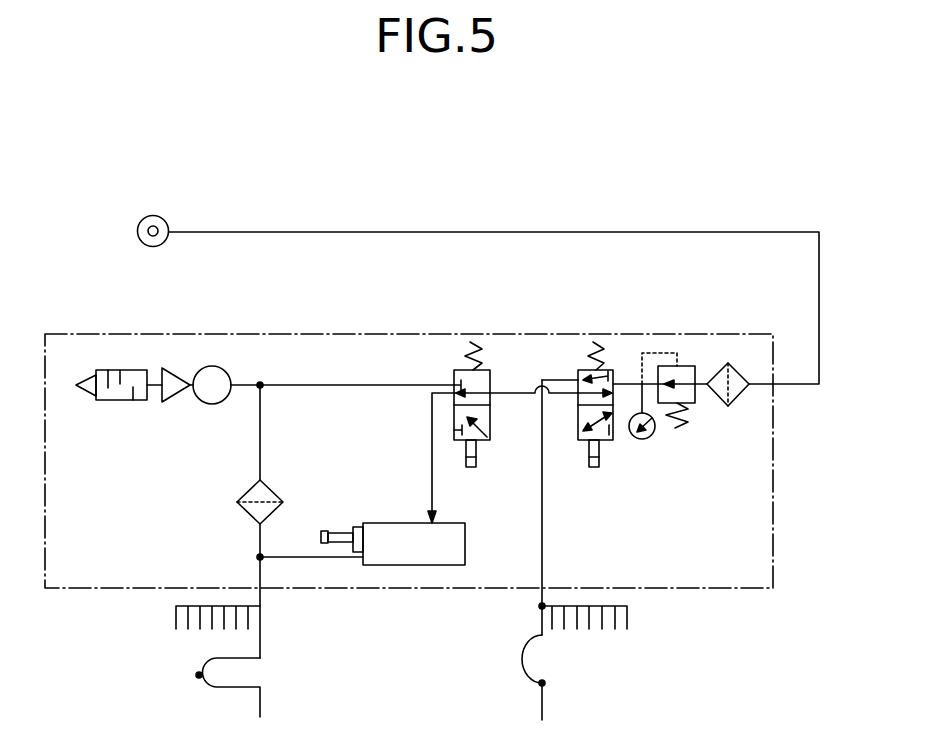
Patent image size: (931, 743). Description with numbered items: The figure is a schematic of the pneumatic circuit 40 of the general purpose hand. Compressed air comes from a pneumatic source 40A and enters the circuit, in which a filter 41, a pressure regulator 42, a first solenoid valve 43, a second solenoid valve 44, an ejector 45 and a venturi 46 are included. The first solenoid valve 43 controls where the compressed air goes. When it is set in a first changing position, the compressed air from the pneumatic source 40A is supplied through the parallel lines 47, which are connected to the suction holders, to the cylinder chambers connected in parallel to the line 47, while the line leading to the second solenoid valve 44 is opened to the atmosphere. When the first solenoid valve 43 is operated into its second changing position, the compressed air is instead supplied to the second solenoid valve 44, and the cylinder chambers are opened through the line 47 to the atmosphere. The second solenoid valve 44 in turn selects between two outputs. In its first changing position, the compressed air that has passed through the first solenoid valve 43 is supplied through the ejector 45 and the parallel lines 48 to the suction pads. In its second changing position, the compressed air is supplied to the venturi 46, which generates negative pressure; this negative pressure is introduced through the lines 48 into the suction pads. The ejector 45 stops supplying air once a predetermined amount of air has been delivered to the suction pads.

The pneumatic circuit 40 is at (773, 558).
The pneumatic source 40A is at (165, 217).
The filter 41 is at (737, 406).
The pressure regulator 42 is at (695, 366).
The first solenoid valve 43 is at (608, 442).
The second solenoid valve 44 is at (485, 440).
The ejector 45 is at (383, 523).
The venturi 46 is at (212, 404).
The parallel lines 47 is at (542, 683).
The parallel lines 48 is at (199, 675).